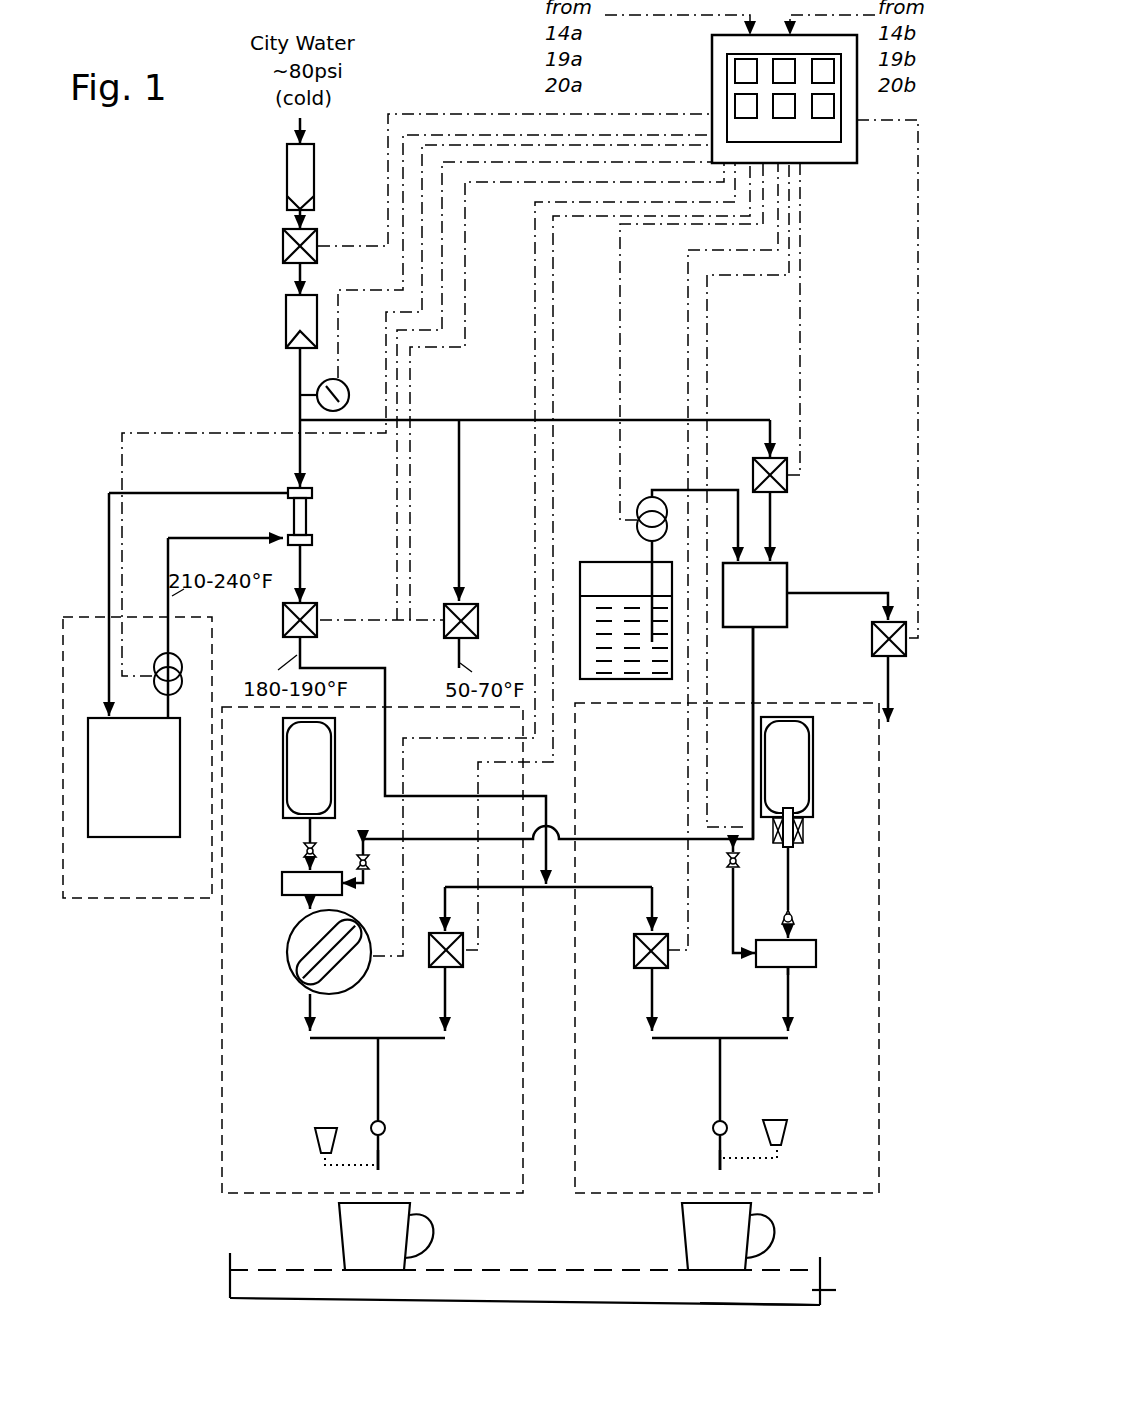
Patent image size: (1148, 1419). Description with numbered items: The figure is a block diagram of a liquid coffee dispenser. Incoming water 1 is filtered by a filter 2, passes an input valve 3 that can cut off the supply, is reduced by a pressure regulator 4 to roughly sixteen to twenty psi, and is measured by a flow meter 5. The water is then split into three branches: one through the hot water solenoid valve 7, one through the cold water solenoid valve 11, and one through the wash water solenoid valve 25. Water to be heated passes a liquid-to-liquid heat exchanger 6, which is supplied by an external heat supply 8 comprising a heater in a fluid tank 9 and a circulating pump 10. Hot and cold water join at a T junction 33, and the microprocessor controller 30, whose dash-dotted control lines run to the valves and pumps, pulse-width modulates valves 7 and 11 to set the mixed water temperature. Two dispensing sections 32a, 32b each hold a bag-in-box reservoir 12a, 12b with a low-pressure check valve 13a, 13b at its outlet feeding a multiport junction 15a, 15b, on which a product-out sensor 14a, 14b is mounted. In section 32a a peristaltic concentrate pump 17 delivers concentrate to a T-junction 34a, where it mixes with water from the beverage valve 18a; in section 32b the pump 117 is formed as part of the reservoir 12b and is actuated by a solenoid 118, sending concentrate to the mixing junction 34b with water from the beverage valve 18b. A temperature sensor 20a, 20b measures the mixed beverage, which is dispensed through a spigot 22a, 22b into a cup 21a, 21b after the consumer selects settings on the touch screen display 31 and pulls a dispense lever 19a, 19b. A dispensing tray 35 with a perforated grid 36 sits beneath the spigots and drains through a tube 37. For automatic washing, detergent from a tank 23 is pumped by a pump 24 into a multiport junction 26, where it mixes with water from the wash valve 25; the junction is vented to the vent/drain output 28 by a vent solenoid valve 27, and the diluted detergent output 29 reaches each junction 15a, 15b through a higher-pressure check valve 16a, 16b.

The incoming water 1 is at (250, 62).
The filter 2 is at (285, 165).
The input valve 3 is at (283, 248).
The pressure regulator 4 is at (286, 316).
The flow meter 5 is at (343, 384).
The liquid-to-liquid heat exchanger 6 is at (312, 498).
The hot water solenoid valve 7 is at (283, 622).
The external heat supply 8 is at (98, 616).
The fluid tank 9 is at (98, 712).
The circulating pump 10 is at (172, 674).
The cold water solenoid valve 11 is at (479, 622).
The reservoir 12a is at (283, 766).
The reservoir 12b is at (815, 773).
The check valve 13a is at (302, 852).
The check valve 13b is at (800, 919).
The product-out sensor 14a is at (292, 884).
The product-out sensor 14b is at (806, 955).
The multiport junction 15a is at (335, 870).
The multiport junction 15b is at (812, 968).
The check valve 16a is at (368, 872).
The check valve 16b is at (726, 867).
The concentrate pump 17 is at (285, 951).
The beverage valve 18a is at (465, 966).
The beverage valve 18b is at (633, 955).
The dispense lever 19a is at (314, 1140).
The dispense lever 19b is at (790, 1129).
The temperature sensor 20a is at (385, 1128).
The temperature sensor 20b is at (713, 1128).
The cup 21a is at (355, 1227).
The cup 21b is at (698, 1222).
The spigot 22a is at (383, 1175).
The spigot 22b is at (713, 1170).
The tank of detergent 23 is at (607, 566).
The pump 24 is at (644, 539).
The wash water solenoid valve 25 is at (789, 489).
The multiport junction 26 is at (778, 589).
The vent solenoid valve 27 is at (871, 645).
The vent/drain output 28 is at (892, 730).
The output 29 is at (752, 698).
The microprocessor controller 30 is at (711, 92).
The touch screen display 31 is at (745, 72).
The dispensing section 32a is at (217, 1194).
The dispensing section 32b is at (881, 1190).
The T junction 33 is at (387, 669).
The T-junction 34a is at (383, 1036).
The mixing junction 34b is at (718, 1036).
The dispensing tray 35 is at (826, 1276).
The perforated grid or shelf 36 is at (780, 1268).
The drain tube 37 is at (826, 1303).
The concentrate pump 117 is at (794, 848).
The solenoid 118 is at (804, 826).